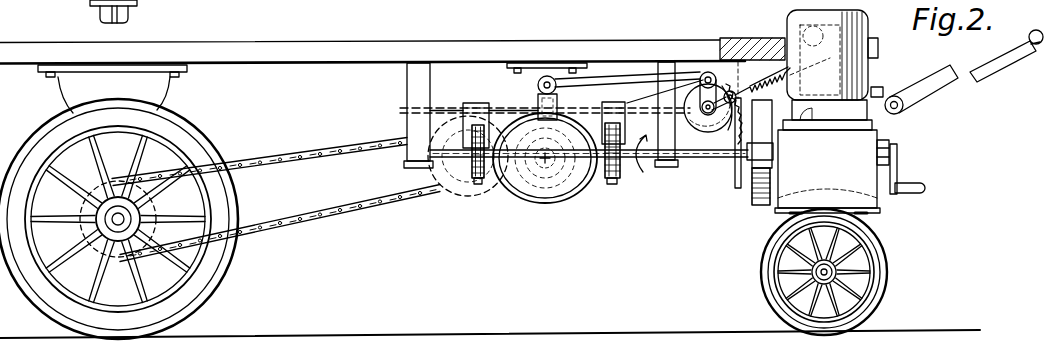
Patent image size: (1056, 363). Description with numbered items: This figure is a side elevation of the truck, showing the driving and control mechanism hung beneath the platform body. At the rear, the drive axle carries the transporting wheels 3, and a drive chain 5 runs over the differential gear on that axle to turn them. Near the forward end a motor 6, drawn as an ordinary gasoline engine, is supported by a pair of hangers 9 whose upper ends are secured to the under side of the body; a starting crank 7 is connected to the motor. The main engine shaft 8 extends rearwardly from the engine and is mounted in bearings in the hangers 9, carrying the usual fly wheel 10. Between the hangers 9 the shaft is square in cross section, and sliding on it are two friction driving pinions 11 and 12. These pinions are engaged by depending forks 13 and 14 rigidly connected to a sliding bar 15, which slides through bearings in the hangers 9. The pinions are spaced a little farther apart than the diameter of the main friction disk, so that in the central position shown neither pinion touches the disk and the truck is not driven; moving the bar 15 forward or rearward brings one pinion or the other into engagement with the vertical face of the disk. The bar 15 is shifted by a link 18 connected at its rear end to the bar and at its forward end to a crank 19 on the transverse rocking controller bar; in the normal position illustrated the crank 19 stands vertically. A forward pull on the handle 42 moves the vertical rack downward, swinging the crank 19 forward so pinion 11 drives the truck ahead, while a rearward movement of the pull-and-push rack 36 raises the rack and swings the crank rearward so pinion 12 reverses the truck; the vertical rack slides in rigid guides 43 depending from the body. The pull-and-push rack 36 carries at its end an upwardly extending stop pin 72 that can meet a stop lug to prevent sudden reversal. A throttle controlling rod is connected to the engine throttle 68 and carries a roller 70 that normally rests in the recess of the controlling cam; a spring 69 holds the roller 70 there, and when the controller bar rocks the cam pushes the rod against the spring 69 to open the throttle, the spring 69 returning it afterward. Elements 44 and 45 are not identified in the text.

The transporting wheels 3 is at (191, 141).
The drive chain 5 is at (303, 157).
The motor 6 is at (866, 149).
The starting crank 7 is at (899, 174).
The main engine shaft 8 is at (723, 132).
The hangers 9 is at (406, 159).
The fly wheel 10 is at (758, 206).
The friction driving pinion 11 is at (478, 186).
The friction driving pinion 12 is at (615, 186).
The depending fork 13 is at (474, 103).
The depending fork 14 is at (612, 101).
The sliding bar 15 is at (503, 115).
The link 18 is at (588, 84).
The crank 19 is at (703, 134).
The pull-and-push rack 36 is at (800, 136).
The handle 42 is at (992, 62).
The rigid guides 43 is at (737, 190).
The drum wheel 44 is at (543, 187).
The gear wheel 45 is at (495, 190).
The engine throttle 68 is at (879, 68).
The spring 69 is at (767, 40).
The roller 70 is at (712, 72).
The stop pin 72 is at (924, 81).